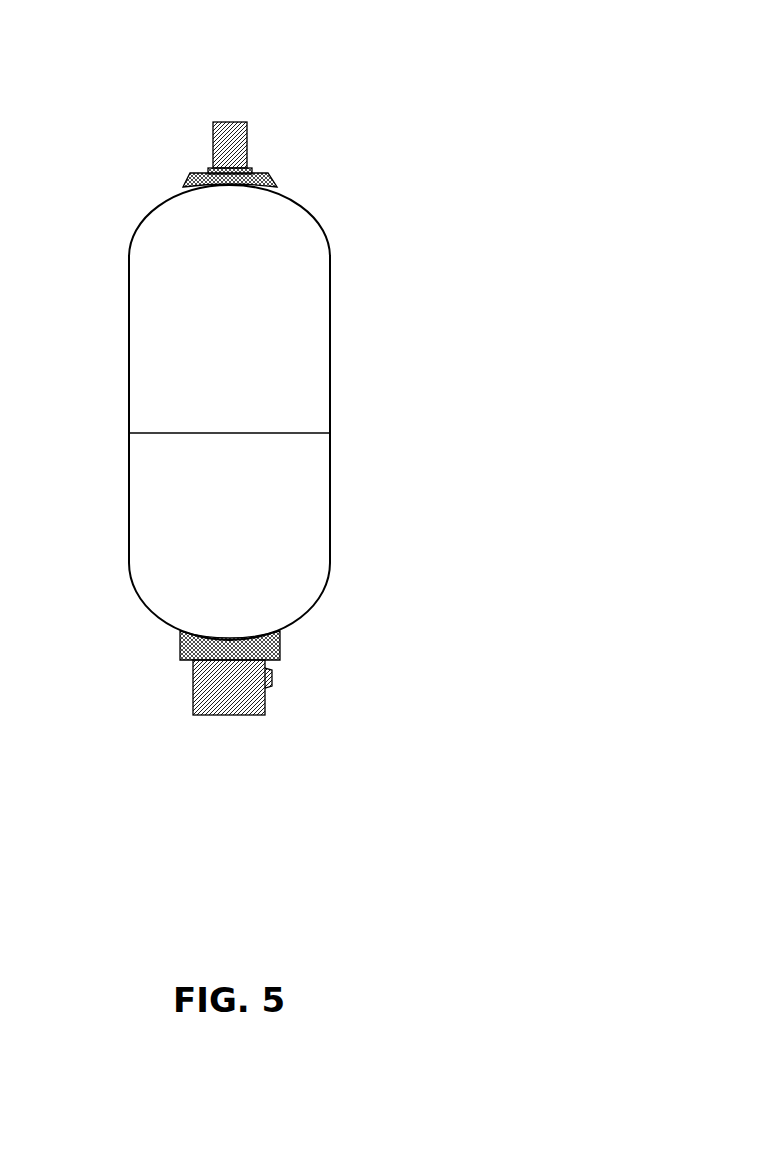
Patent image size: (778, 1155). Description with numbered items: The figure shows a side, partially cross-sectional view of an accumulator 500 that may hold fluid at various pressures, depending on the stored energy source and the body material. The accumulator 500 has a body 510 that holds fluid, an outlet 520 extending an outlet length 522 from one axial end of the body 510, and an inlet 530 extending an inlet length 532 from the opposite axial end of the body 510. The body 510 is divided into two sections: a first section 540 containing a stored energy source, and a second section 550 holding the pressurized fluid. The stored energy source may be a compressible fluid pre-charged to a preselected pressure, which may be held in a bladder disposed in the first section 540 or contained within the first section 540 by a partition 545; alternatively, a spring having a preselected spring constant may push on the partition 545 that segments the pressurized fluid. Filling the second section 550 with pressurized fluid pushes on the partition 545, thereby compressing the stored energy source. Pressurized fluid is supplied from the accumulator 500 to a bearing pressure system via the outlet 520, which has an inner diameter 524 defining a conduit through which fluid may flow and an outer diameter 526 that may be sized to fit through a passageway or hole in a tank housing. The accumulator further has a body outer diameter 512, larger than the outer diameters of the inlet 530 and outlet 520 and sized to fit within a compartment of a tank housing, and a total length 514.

The accumulator 500 is at (389, 116).
The body 510 is at (330, 285).
The body outer diameter 512 is at (327, 563).
The total length 514 is at (210, 122).
The outlet 520 is at (238, 762).
The outlet length 522 is at (120, 760).
The inner diameter 524 is at (162, 775).
The outer diameter 526 is at (148, 733).
The inlet 530 is at (226, 116).
The inlet length 532 is at (120, 80).
The first section 540 is at (233, 348).
The partition 545 is at (295, 432).
The second section 550 is at (269, 498).